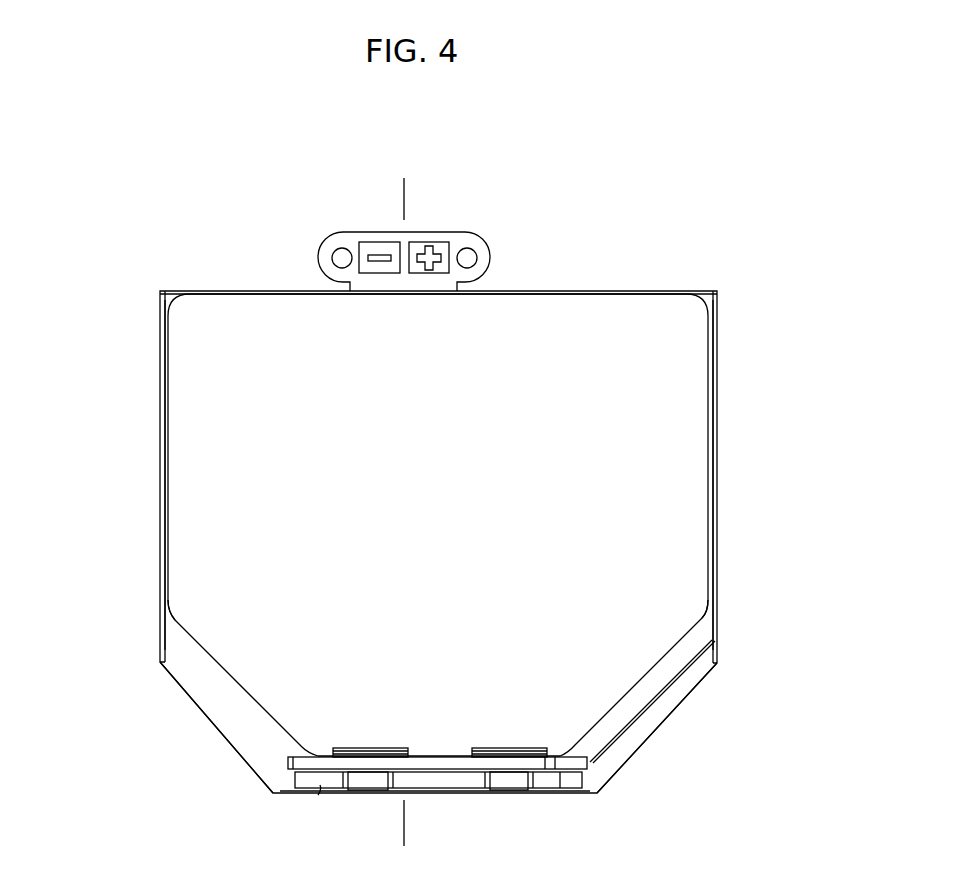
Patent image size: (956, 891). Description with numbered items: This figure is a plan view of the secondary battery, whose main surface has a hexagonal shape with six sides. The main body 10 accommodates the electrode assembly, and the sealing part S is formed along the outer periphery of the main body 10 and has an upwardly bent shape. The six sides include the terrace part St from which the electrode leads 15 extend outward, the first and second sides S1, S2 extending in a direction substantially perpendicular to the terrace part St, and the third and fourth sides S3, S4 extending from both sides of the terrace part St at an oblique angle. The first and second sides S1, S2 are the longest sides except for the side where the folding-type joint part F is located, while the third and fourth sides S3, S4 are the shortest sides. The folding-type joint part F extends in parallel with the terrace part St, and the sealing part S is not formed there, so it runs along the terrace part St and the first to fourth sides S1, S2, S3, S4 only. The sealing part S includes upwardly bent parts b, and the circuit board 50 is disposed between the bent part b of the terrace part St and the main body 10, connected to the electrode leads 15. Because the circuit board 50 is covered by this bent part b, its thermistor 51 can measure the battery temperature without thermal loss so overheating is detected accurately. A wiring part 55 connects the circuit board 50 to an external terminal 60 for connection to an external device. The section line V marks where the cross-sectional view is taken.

The main body 10 is at (453, 511).
The electrode leads 15 is at (505, 795).
The circuit board 50 is at (438, 768).
The thermistor 51 is at (311, 755).
The wiring part 55 is at (648, 705).
The external terminal 60 is at (447, 237).
The sealing part S is at (688, 680).
The first side S1 is at (726, 470).
The second side S2 is at (150, 470).
The third side S3 is at (680, 730).
The fourth side S4 is at (196, 733).
The bent part b is at (162, 612).
The terrace part St is at (448, 803).
The folding-type joint part F is at (545, 268).
The line V- V is at (400, 200).